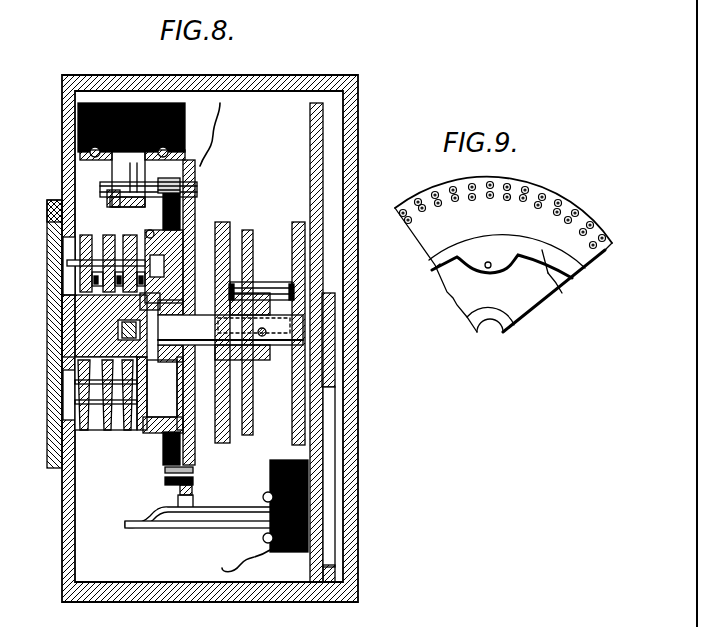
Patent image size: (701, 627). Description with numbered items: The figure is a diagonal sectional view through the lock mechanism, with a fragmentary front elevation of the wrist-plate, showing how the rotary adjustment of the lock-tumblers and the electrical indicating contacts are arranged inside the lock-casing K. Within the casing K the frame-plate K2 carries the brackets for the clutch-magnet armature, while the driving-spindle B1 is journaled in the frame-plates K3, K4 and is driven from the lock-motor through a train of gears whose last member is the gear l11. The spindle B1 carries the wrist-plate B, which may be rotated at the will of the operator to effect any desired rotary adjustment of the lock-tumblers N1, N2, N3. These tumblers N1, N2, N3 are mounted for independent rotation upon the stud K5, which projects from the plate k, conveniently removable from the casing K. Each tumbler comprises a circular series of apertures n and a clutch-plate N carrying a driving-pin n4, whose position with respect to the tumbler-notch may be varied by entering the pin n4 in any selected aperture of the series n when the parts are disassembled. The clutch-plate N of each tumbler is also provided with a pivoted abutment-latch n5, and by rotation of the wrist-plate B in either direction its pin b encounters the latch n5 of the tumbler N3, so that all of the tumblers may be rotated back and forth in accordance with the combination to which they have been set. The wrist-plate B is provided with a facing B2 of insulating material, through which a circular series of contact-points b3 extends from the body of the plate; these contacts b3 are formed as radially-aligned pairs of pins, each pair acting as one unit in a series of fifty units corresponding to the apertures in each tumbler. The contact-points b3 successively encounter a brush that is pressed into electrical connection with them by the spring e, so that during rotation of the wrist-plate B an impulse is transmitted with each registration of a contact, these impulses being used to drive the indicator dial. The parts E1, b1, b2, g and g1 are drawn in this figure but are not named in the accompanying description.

In FIG. 8, the lock-casing K is at (62, 170).
In FIG. 8, the frame-plate K2 is at (312, 512).
In FIG. 8, the frame-plate K3 is at (300, 224).
In FIG. 8, the frame-plate K4 is at (222, 224).
In FIG. 8, the stud K5 is at (70, 330).
In FIG. 8, the plate k is at (63, 374).
In FIG. 8, the armature bar E1 is at (106, 189).
In FIG. 8, the spring e is at (131, 176).
In FIG. 8, the wrist-plate B is at (192, 205).
In FIG. 9, the wrist-plate B is at (555, 298).
In FIG. 8, the driving-spindle B1 is at (200, 345).
In FIG. 8, the facing B2 is at (180, 178).
In FIG. 9, the facing B2 is at (503, 254).
In FIG. 8, the pin b is at (150, 238).
In FIG. 9, the pin b is at (488, 262).
In FIG. 8, the contact strip b1 is at (165, 470).
In FIG. 9, the contact strip b1 is at (432, 272).
In FIG. 9, the segment edge b2 is at (560, 282).
In FIG. 8, the contact-points b3 is at (182, 186).
In FIG. 9, the contact-points b3 is at (506, 185).
In FIG. 8, the gear l11 is at (253, 258).
In FIG. 8, the clutch-plate N is at (112, 382).
In FIG. 8, the lock-tumbler N1 is at (85, 431).
In FIG. 8, the lock-tumbler N2 is at (108, 431).
In FIG. 8, the lock-tumbler N3 is at (130, 431).
In FIG. 8, the apertures n is at (80, 398).
In FIG. 8, the driving-pin n4 is at (67, 263).
In FIG. 8, the abutment-latch n5 is at (87, 240).
In FIG. 8, the spring block g is at (194, 490).
In FIG. 8, the leaf spring g1 is at (236, 520).